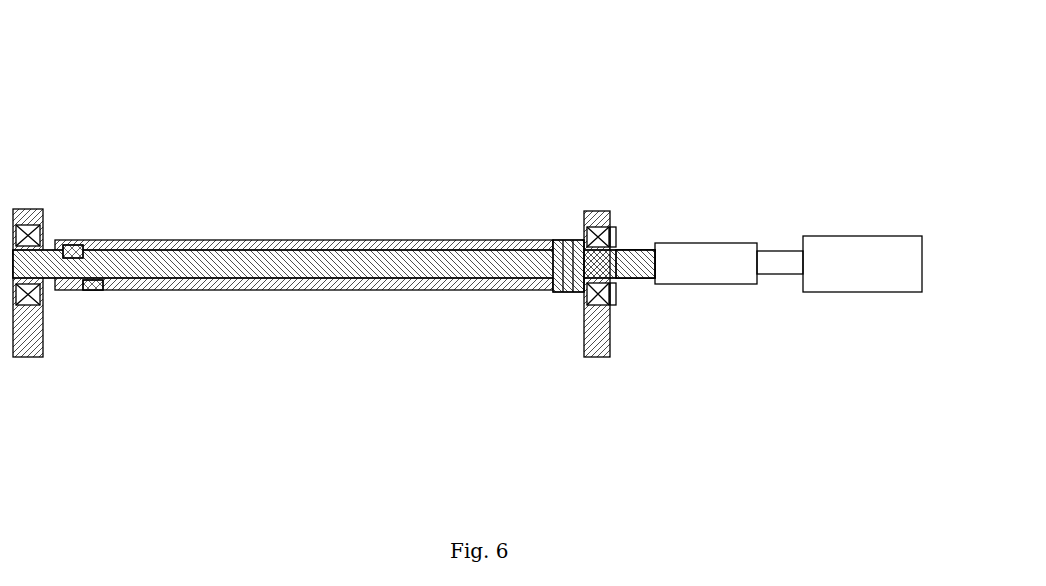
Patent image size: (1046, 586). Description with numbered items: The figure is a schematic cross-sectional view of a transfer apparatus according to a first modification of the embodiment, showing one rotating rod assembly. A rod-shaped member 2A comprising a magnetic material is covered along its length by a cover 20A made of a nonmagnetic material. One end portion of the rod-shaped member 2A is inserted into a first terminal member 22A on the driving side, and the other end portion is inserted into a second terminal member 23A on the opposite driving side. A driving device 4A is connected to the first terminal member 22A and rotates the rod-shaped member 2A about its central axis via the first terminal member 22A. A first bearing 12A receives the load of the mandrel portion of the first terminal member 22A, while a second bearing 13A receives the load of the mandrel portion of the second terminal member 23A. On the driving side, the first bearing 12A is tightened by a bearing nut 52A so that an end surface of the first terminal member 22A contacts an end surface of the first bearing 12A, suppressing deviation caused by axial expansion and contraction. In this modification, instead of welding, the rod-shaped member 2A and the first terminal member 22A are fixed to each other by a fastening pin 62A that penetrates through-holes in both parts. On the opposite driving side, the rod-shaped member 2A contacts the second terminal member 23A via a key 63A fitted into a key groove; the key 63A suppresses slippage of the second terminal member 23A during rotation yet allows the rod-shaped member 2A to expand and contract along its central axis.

The rod-shaped member 2A is at (372, 267).
The driving device 4A is at (828, 235).
The first bearing 12A is at (602, 233).
The second bearing 13A is at (40, 300).
The cover 20A is at (273, 238).
The first terminal member 22A is at (637, 248).
The second terminal member 23A is at (57, 238).
The bearing nut 52A is at (622, 288).
The fastening pin 62A is at (568, 288).
The key 63A is at (85, 245).